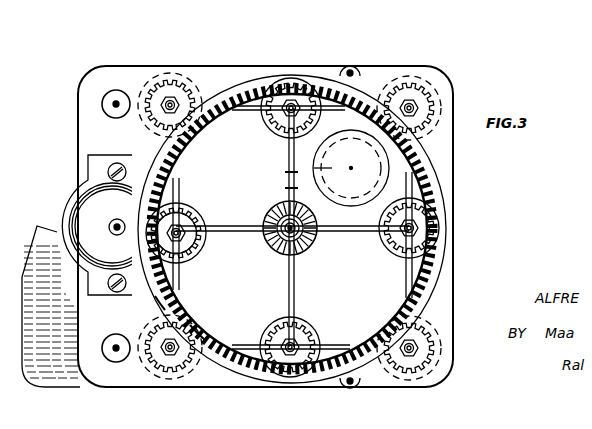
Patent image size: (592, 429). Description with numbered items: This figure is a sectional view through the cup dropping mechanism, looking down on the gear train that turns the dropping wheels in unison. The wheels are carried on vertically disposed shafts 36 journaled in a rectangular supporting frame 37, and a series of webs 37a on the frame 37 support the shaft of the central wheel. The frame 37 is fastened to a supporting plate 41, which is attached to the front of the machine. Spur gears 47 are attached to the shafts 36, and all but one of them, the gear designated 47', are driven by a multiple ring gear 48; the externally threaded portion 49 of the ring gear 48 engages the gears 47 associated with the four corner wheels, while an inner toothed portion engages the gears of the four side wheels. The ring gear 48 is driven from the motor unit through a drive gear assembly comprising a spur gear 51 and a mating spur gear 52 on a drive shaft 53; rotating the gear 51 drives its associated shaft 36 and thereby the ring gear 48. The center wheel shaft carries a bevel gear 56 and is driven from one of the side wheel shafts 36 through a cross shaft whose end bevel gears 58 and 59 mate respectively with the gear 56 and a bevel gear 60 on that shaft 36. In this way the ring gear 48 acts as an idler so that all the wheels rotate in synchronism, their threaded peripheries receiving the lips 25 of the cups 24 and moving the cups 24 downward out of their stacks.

The supporting frame 37 is at (406, 57).
The webs 37a is at (290, 157).
The shafts 36 is at (418, 112).
The supporting plate 41 is at (48, 229).
The spur gears 47 is at (297, 215).
The spur gear 47' is at (191, 237).
The multiple ring gear 48 is at (200, 338).
The externally threaded portion 49 is at (156, 298).
The spur gear 51 is at (198, 208).
The mating spur gear 52 is at (133, 199).
The drive shaft 53 is at (110, 227).
The bevel gear 56 is at (270, 247).
The bevel gear 58 is at (311, 250).
The bevel gear 59 is at (390, 236).
The bevel gear 60 is at (396, 204).
The cups 24 is at (286, 172).
The lips 25 is at (286, 188).